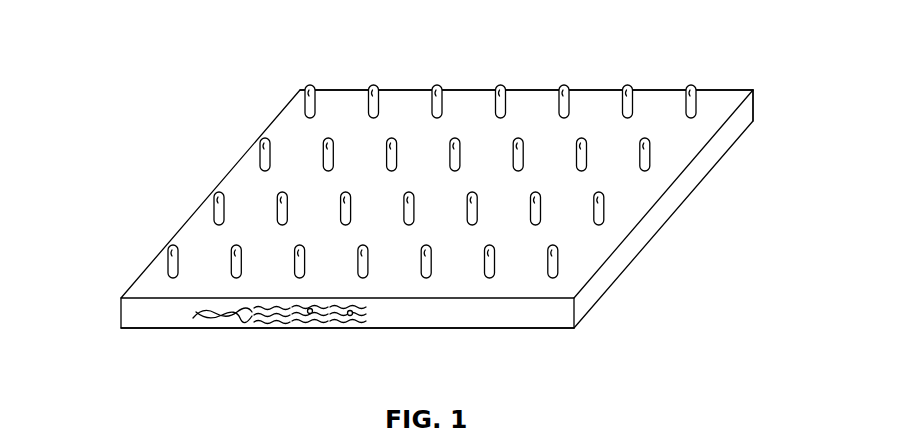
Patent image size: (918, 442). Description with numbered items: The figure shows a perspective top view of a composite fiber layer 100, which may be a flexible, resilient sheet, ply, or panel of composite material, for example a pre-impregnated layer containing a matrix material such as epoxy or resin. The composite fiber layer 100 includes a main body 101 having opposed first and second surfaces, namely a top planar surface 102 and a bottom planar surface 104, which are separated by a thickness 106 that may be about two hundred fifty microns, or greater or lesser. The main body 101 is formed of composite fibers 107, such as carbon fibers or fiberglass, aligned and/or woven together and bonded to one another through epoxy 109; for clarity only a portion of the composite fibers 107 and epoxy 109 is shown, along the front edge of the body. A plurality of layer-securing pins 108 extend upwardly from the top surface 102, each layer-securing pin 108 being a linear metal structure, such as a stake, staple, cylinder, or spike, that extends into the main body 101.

The composite fiber layer 100 is at (122, 69).
The main body 101 is at (631, 53).
The top planar surface 102 is at (345, 115).
The bottom planar surface 104 is at (192, 321).
The thickness 106 is at (763, 121).
The composite fibers 107 is at (318, 322).
The layer-securing pins 108 is at (375, 86).
The epoxy 109 is at (352, 316).